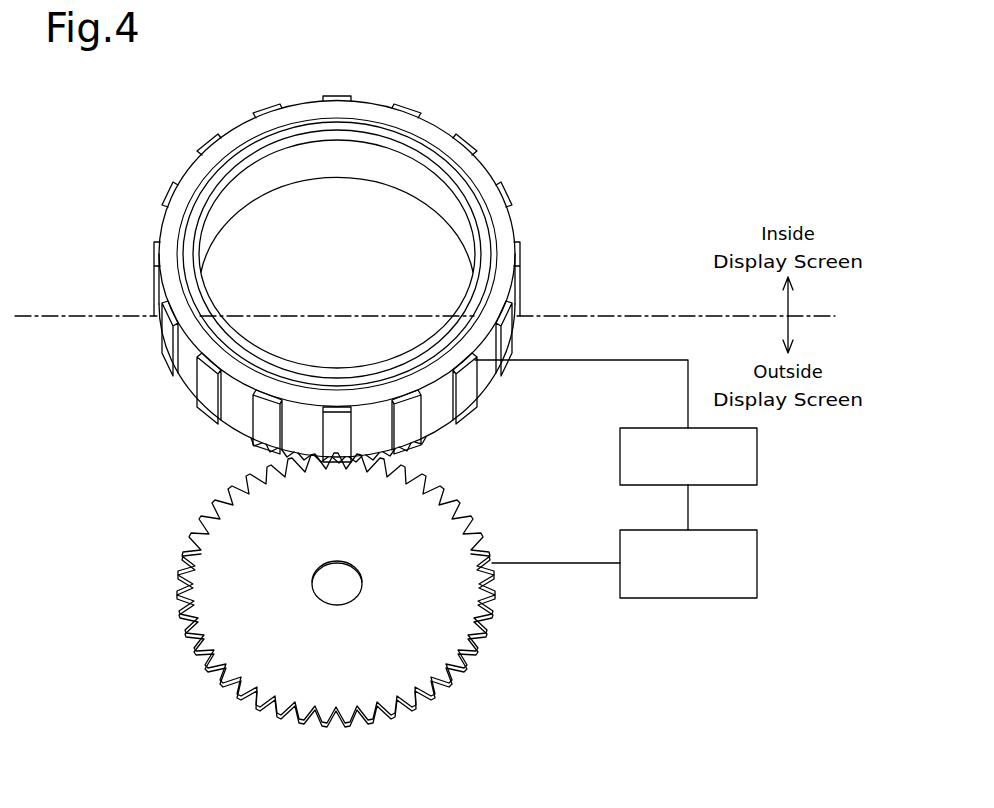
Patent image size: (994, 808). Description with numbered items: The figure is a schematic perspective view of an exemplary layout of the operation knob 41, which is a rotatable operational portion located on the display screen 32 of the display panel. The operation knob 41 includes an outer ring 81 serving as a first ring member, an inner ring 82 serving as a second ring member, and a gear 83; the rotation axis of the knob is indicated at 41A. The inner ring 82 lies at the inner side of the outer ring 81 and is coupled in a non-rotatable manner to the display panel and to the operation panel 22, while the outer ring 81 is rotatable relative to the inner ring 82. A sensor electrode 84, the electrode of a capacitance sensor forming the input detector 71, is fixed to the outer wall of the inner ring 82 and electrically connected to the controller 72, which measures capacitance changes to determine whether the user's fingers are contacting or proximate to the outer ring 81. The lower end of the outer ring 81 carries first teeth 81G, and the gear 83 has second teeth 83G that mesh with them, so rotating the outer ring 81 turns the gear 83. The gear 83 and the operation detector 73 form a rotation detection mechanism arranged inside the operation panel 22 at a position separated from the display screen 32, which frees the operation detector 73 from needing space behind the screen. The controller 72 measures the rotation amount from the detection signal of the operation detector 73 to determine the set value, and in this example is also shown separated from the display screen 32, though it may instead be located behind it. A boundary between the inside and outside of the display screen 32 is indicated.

The operation knob 41 is at (155, 131).
The rotation axis of dial 41A is at (349, 313).
The outer ring 81 is at (443, 128).
The inner ring 82 is at (367, 120).
The sensor electrode 84 is at (404, 254).
The input detector 71 is at (482, 203).
The first teeth 81G is at (432, 436).
The gear 83 is at (363, 590).
The second teeth 83G is at (482, 507).
The controller 72 is at (758, 458).
The operation detector 73 is at (758, 568).
The display screen 32 is at (661, 249).
The operation panel 22 is at (661, 662).